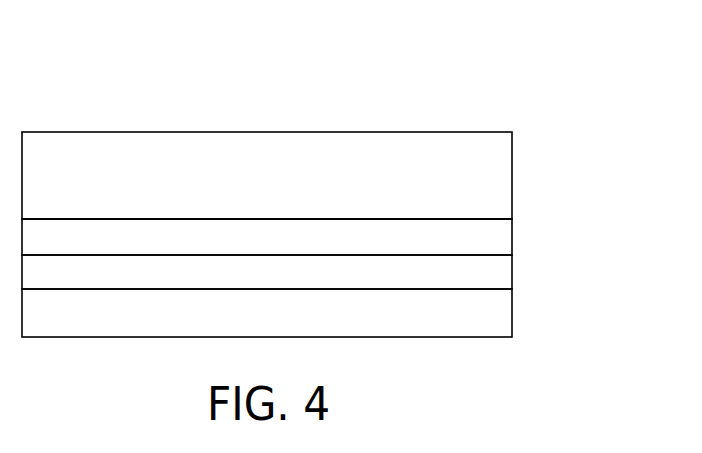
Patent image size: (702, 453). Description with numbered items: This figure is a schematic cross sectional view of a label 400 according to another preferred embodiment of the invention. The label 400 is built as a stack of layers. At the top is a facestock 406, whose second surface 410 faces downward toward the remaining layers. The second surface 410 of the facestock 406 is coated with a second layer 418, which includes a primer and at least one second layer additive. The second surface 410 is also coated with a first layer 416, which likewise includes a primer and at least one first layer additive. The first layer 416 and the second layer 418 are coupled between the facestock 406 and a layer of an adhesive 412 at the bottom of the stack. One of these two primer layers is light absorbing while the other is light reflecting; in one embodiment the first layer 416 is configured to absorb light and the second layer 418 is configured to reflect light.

The label 400 is at (572, 113).
The facestock 406 is at (503, 181).
The second layer 418 is at (503, 238).
The first layer 416 is at (503, 273).
The adhesive 412 is at (503, 314).
The second surface 410 is at (418, 221).